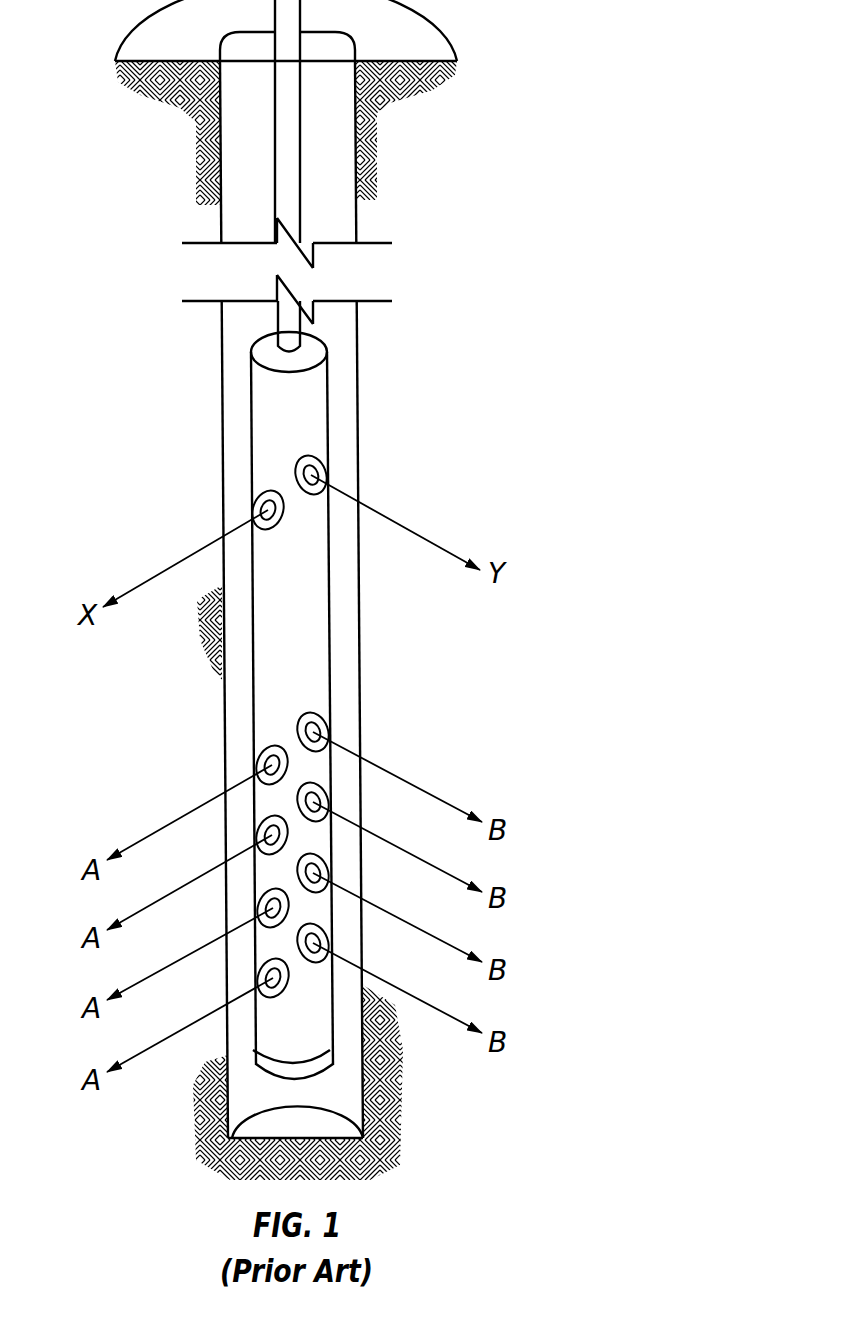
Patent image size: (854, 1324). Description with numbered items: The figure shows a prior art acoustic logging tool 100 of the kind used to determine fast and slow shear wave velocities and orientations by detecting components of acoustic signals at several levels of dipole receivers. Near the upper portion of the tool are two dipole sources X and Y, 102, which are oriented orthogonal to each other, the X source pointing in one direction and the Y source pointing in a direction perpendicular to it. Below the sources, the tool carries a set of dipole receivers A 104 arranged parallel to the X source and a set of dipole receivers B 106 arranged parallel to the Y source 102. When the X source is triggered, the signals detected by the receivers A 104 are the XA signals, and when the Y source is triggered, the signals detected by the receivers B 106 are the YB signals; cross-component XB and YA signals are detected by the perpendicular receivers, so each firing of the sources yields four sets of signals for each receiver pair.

The acoustic logging tool 100 is at (332, 346).
The dipole sources X and Y 102 is at (257, 495).
The dipole receivers A 104 is at (260, 752).
The dipole receivers B 106 is at (323, 710).